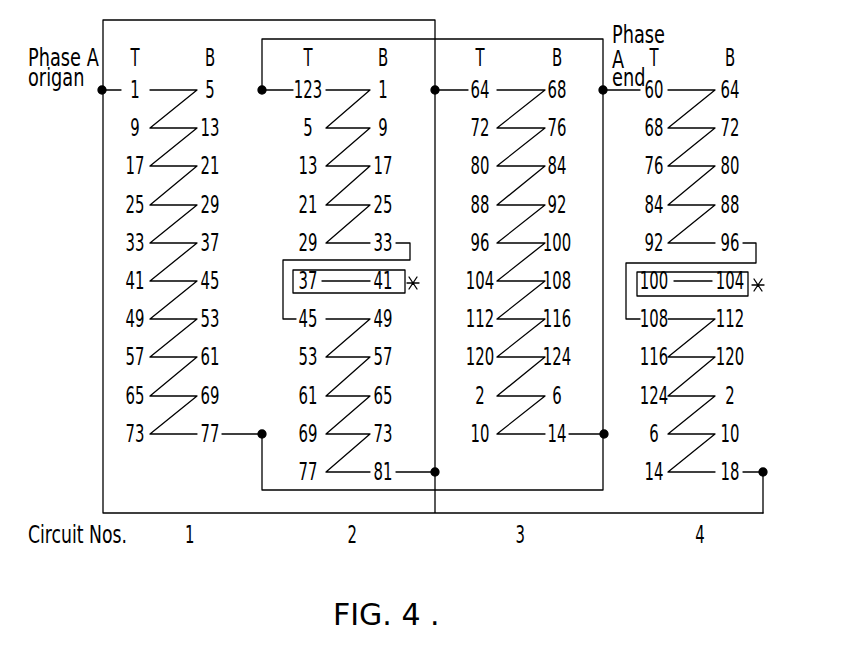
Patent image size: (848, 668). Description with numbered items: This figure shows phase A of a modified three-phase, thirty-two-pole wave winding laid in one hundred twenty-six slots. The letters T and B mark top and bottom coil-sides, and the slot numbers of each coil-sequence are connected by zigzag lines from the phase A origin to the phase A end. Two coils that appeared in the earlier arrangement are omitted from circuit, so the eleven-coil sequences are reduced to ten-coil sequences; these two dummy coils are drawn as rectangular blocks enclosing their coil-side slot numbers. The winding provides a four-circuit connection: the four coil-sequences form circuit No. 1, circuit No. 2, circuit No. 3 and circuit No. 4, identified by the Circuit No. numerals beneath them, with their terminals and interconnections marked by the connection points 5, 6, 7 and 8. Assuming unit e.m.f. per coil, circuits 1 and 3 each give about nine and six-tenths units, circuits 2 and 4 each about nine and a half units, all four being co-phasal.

The circuit No. 1 is at (100, 93).
The circuit No. 2 is at (273, 419).
The circuit No. 3 is at (262, 94).
The circuit No. 4 is at (460, 471).
The circuit 3 start terminal 5 is at (446, 79).
The circuit 3 end terminal 6 is at (602, 440).
The phase A end terminal 7 is at (618, 108).
The circuit 4 end terminal 8 is at (779, 473).